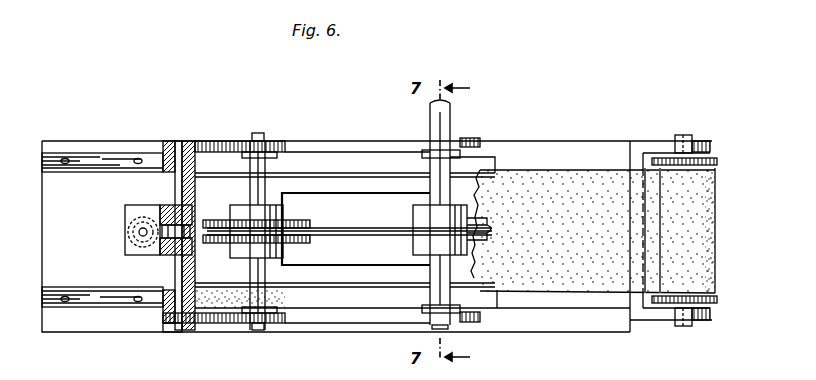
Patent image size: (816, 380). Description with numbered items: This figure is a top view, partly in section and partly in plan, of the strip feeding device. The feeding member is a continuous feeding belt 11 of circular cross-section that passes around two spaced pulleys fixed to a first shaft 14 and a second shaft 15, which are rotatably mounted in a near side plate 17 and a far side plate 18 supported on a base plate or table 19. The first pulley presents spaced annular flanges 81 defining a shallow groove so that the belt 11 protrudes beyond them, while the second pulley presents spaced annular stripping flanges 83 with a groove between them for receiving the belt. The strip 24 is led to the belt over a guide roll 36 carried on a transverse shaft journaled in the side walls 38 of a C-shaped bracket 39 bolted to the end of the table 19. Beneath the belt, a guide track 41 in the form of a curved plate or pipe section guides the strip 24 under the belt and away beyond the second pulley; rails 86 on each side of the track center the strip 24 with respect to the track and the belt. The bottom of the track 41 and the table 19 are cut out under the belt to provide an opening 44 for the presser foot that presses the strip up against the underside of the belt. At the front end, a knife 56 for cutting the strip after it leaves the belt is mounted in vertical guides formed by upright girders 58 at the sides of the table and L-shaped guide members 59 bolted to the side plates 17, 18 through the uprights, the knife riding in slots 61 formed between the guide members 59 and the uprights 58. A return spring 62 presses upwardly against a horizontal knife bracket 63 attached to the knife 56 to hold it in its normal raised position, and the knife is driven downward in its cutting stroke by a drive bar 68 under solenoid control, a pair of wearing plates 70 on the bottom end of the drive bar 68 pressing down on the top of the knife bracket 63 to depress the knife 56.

The guide track 41 is at (68, 186).
The rails 86 is at (104, 154).
The upright girders 58 is at (182, 141).
The knife 56 is at (182, 265).
The slots 61 is at (163, 308).
The L-shaped guide members 59 is at (178, 324).
The knife bracket 63 is at (126, 216).
The return spring 62 is at (128, 244).
The drive bar 68 is at (176, 207).
The wearing plates 70 is at (192, 212).
The far side plate 18 is at (336, 141).
The near side plate 17 is at (405, 330).
The second shaft 15 is at (258, 133).
The stripping flanges 83 is at (310, 226).
The feeding belt 11 is at (374, 232).
The annular flanges 81 is at (410, 216).
The opening 44 is at (370, 262).
The first shaft 14 is at (454, 117).
The strip 24 is at (548, 178).
The guide roll 36 is at (697, 215).
The C-shaped bracket 39 is at (634, 138).
The side walls 38 is at (662, 140).
The table 19 is at (612, 328).